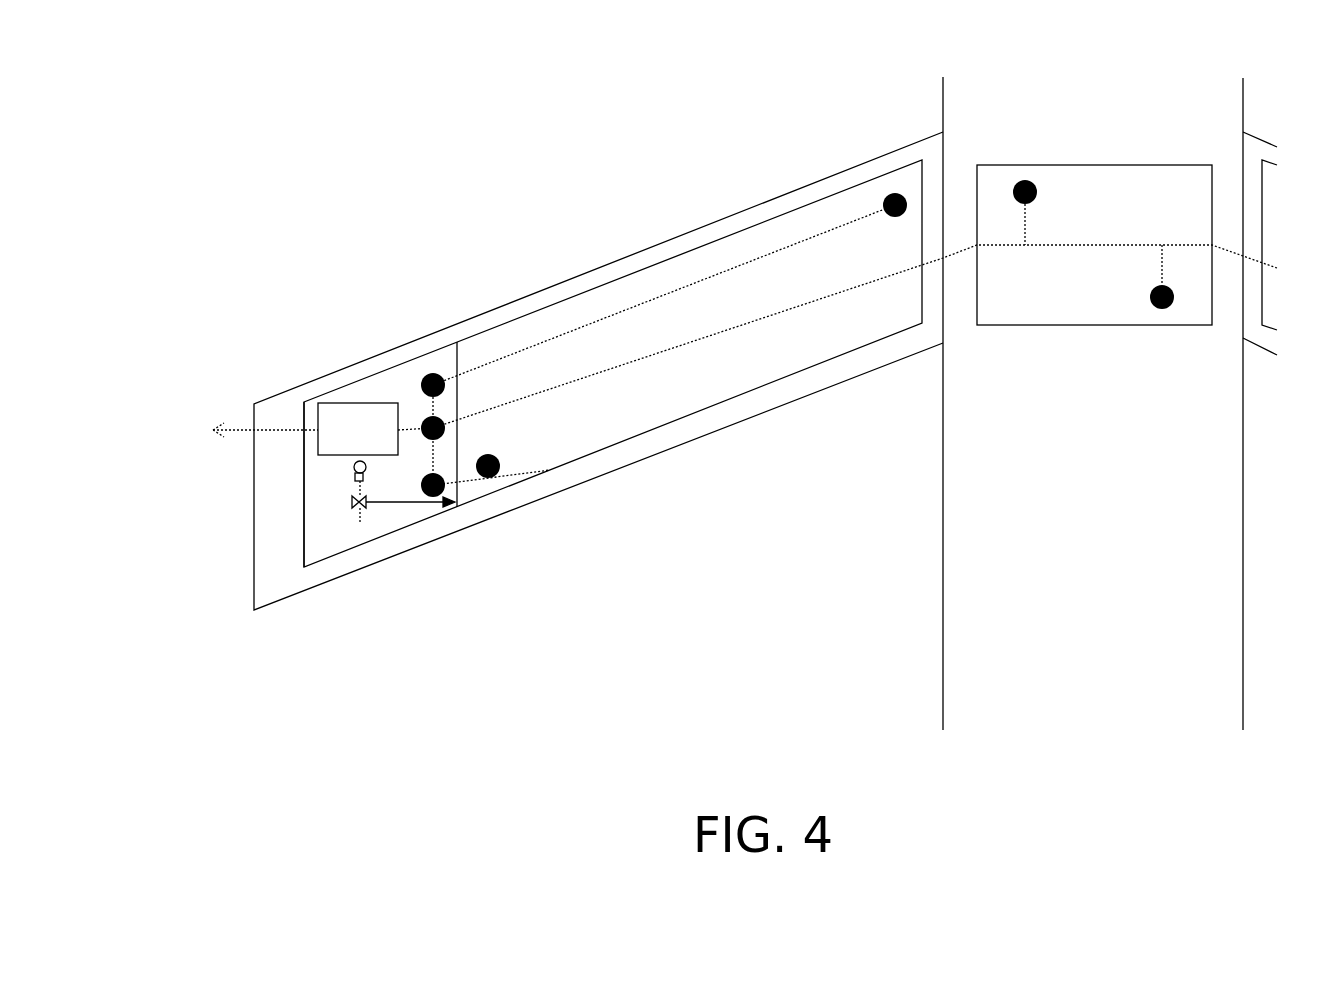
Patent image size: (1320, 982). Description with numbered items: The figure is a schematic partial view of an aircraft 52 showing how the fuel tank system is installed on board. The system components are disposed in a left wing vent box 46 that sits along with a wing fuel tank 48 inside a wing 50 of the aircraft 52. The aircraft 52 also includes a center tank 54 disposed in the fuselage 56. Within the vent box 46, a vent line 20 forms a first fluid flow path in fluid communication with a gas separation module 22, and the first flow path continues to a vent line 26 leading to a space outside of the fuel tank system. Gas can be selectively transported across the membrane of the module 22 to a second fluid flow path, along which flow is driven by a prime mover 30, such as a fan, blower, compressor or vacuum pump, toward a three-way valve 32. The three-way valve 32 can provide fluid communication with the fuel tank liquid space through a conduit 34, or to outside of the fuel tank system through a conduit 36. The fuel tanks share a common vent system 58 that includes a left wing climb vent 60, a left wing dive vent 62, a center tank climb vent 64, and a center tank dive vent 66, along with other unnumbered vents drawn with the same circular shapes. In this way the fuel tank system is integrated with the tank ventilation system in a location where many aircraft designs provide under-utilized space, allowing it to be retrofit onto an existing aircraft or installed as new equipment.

The vent line 20 is at (412, 428).
The gas separation module 22 is at (357, 402).
The vent line 26 is at (237, 437).
The prime mover 30 is at (353, 470).
The three-way valve 32 is at (350, 505).
The conduit 34 is at (417, 504).
The conduit 36 is at (353, 515).
The left wing vent box 46 is at (303, 415).
The wing fuel tank 48 is at (573, 296).
The wing 50 is at (575, 487).
The aircraft 52 is at (370, 117).
The center tank 54 is at (1067, 165).
The fuselage 56 is at (940, 560).
The common vent system 58 is at (805, 305).
The left wing climb vent 60 is at (885, 195).
The left wing dive vent 62 is at (493, 480).
The center tank climb vent 64 is at (1015, 180).
The center tank dive vent 66 is at (1160, 310).